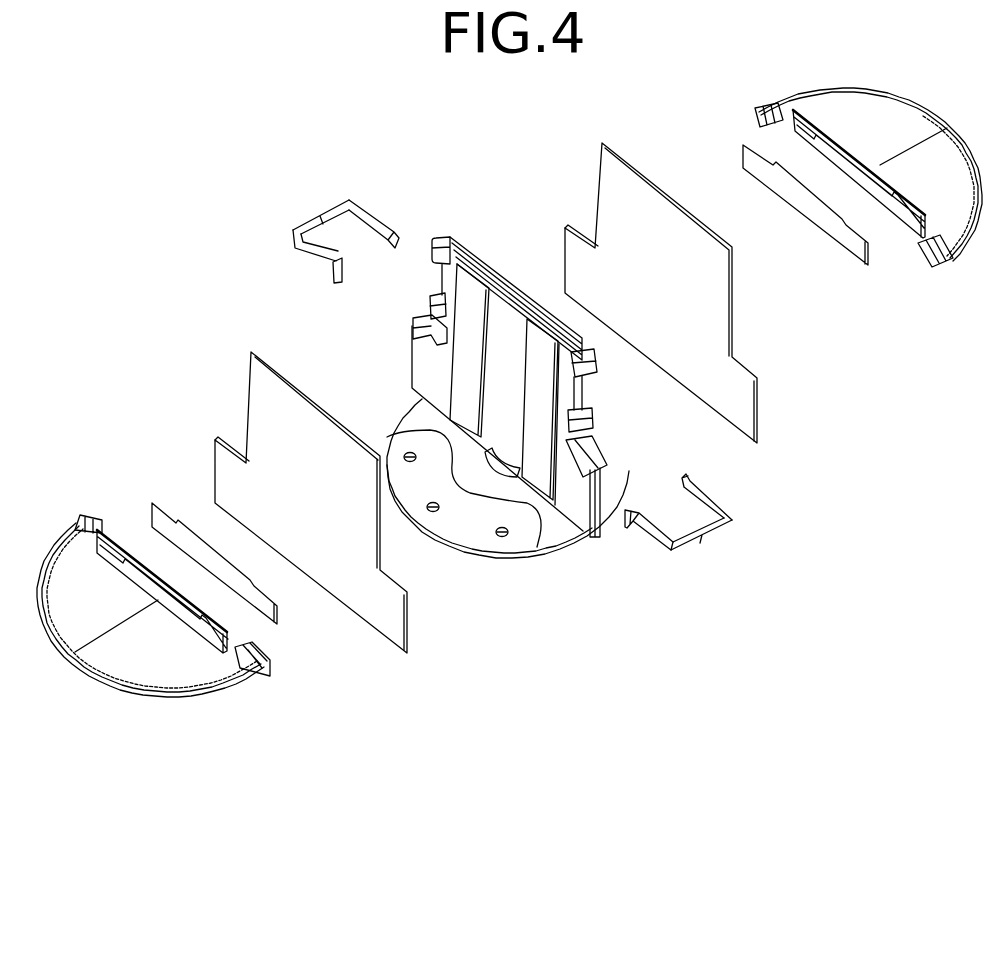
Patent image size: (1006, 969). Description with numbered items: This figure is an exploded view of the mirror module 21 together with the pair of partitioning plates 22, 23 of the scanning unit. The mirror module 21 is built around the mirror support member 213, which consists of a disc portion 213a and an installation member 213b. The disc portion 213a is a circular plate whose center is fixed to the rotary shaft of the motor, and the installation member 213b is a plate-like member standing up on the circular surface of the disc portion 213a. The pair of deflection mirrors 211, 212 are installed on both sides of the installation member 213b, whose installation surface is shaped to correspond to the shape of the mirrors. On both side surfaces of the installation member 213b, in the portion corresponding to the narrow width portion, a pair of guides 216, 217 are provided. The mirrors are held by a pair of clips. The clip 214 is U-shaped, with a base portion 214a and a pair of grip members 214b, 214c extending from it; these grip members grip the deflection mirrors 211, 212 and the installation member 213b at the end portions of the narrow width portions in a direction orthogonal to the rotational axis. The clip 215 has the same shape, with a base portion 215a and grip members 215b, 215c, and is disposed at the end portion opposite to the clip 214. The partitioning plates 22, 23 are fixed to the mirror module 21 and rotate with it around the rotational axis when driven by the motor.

The mirror module 21 is at (872, 767).
The deflection mirror 211 is at (352, 590).
The deflection mirror 212 is at (743, 397).
The mirror support member 213 is at (537, 461).
The disc portion 213a is at (523, 532).
The installation member 213b is at (587, 387).
The clip 214 is at (698, 632).
The base portion 214a is at (718, 540).
The grip member 214b is at (650, 533).
The grip member 214c is at (707, 502).
The clip 215 is at (420, 511).
The base portion 215a is at (313, 218).
The grip member 215b is at (310, 252).
The grip member 215c is at (363, 218).
The guide 216 is at (583, 337).
The guide 217 is at (438, 240).
The partitioning plate 22 is at (183, 667).
The partitioning plate 23 is at (960, 220).